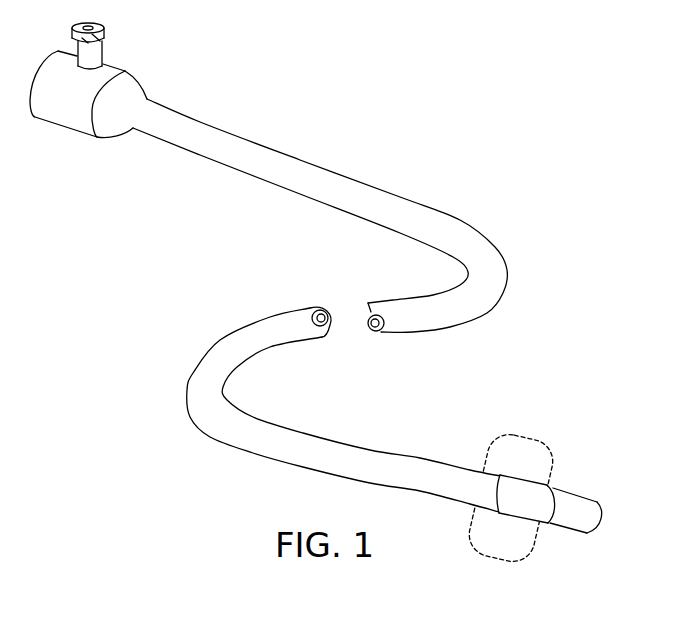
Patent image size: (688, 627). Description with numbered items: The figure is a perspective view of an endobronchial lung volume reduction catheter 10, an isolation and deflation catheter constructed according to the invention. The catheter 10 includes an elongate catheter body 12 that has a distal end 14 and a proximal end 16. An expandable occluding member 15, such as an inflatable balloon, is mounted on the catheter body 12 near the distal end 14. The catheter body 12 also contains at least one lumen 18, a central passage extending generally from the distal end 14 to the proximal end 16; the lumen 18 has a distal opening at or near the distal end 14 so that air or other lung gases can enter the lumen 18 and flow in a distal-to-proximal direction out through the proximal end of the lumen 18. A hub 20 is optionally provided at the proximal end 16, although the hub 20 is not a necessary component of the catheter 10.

The endobronchial lung volume reduction catheter 10 is at (332, 311).
The elongate catheter body 12 is at (281, 172).
The distal end 14 is at (580, 498).
The expandable occluding member 15 is at (510, 518).
The proximal end 16 is at (146, 99).
The lumen 18 is at (373, 334).
The hub 20 is at (72, 110).